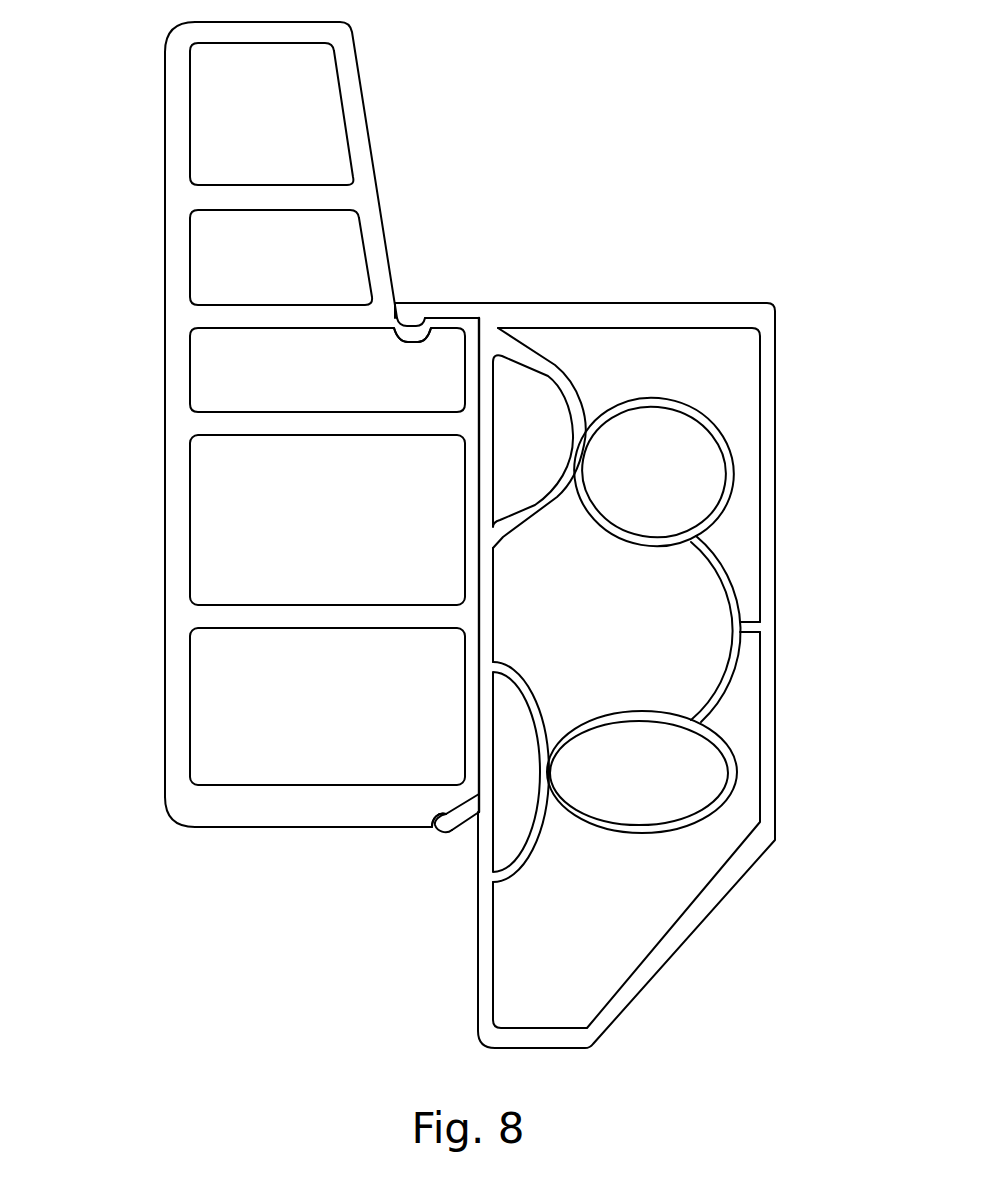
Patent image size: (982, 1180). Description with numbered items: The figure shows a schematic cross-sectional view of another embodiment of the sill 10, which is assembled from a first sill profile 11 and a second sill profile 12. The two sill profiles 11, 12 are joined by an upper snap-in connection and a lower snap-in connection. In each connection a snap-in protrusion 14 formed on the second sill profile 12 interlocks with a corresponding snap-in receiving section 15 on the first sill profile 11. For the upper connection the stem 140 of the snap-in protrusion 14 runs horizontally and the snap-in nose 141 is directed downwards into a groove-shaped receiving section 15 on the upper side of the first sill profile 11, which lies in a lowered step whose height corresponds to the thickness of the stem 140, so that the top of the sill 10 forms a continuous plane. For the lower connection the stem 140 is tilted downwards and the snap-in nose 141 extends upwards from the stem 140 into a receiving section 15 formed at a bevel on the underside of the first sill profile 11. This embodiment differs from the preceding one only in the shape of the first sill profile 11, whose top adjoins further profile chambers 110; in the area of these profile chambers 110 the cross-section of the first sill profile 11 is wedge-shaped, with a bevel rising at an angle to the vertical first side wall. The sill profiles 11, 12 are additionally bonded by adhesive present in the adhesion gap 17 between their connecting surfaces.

The sill 10 is at (461, 535).
The first sill profile 11 is at (268, 424).
The second sill profile 12 is at (795, 406).
The snap-in protrusion 14 is at (420, 553).
The snap-in receiving section 15 is at (392, 348).
The adhesion gap 17 is at (479, 497).
The profile chambers 110 is at (250, 129).
The stem 140 is at (466, 302).
The snap-in nose 141 is at (413, 316).